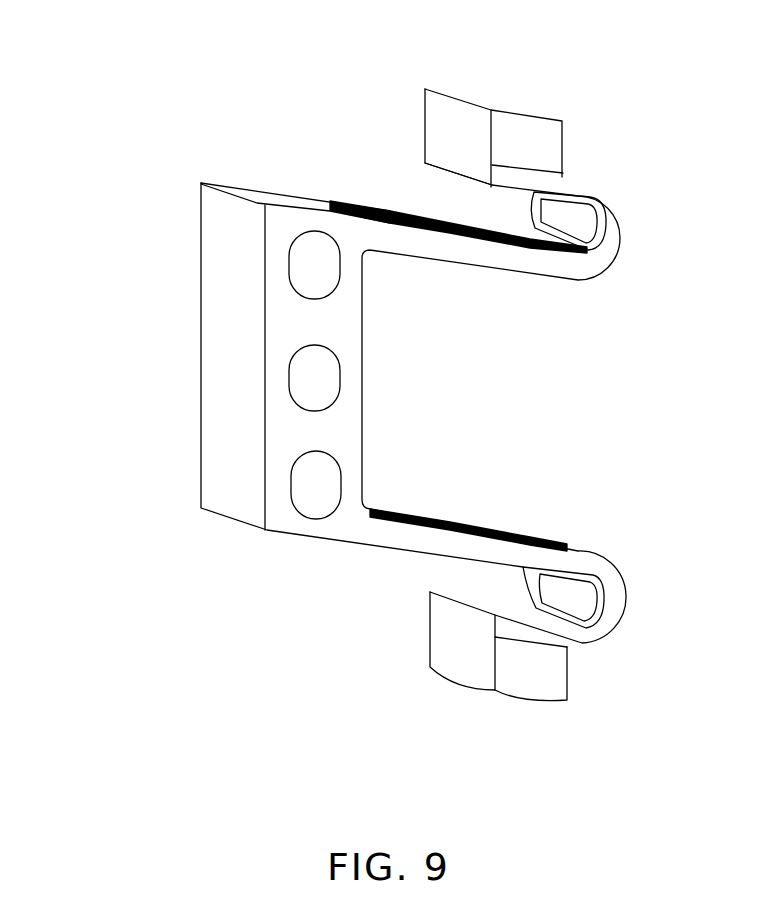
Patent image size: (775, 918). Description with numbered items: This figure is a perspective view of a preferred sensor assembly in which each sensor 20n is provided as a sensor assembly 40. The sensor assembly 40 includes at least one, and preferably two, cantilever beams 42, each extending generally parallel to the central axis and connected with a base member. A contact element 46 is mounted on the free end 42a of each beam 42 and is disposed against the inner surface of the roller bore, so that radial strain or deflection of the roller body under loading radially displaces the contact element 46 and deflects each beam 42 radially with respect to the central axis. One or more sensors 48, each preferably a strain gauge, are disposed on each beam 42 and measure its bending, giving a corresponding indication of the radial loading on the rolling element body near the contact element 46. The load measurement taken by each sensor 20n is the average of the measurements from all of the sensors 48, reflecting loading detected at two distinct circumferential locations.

The sensor 20n is at (626, 101).
The sensor assembly 40 is at (188, 111).
The cantilever beam 42 is at (508, 258).
The free end of beam 42a is at (517, 180).
The contact element 46 is at (485, 92).
The sensor 48 is at (407, 210).